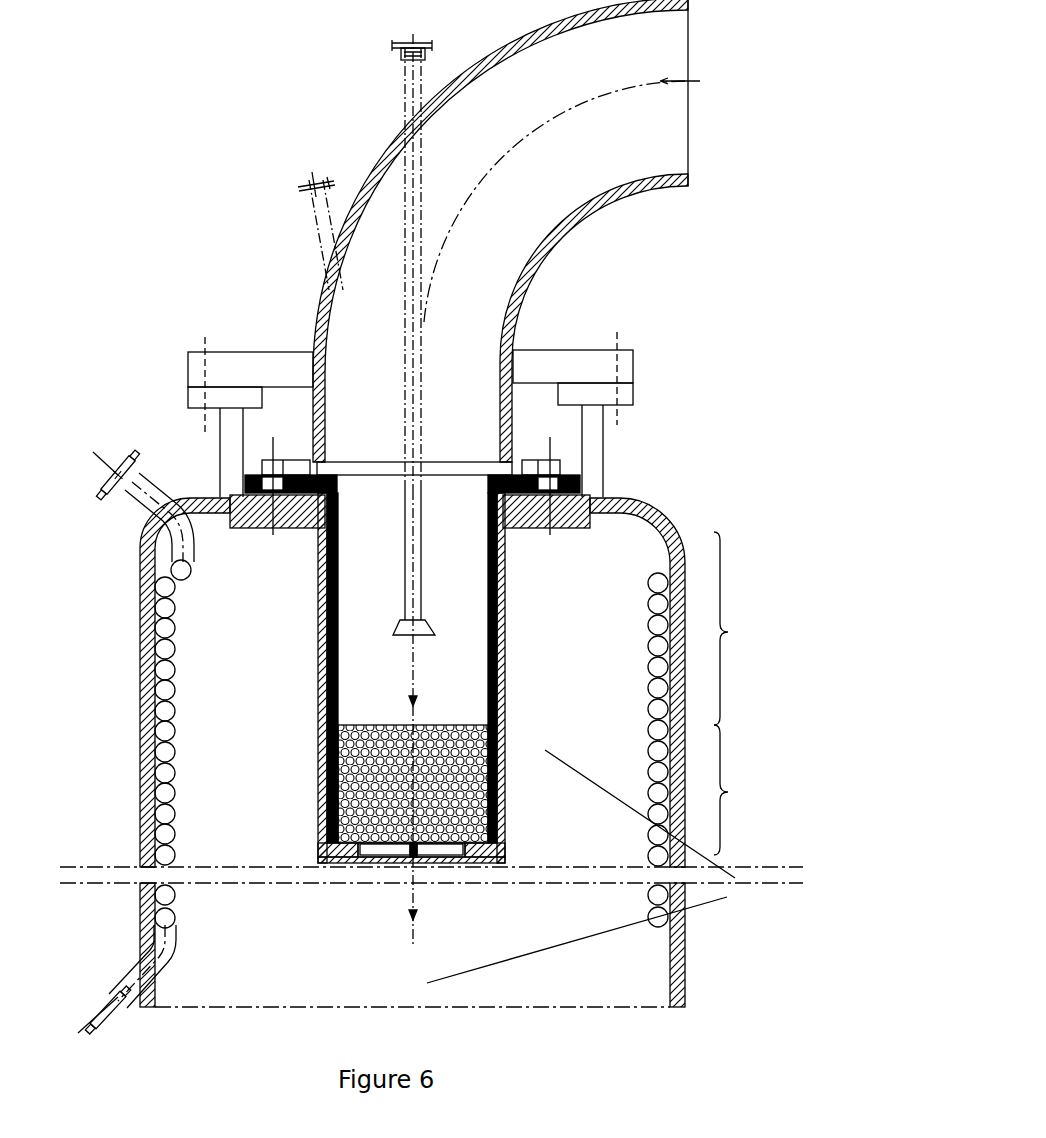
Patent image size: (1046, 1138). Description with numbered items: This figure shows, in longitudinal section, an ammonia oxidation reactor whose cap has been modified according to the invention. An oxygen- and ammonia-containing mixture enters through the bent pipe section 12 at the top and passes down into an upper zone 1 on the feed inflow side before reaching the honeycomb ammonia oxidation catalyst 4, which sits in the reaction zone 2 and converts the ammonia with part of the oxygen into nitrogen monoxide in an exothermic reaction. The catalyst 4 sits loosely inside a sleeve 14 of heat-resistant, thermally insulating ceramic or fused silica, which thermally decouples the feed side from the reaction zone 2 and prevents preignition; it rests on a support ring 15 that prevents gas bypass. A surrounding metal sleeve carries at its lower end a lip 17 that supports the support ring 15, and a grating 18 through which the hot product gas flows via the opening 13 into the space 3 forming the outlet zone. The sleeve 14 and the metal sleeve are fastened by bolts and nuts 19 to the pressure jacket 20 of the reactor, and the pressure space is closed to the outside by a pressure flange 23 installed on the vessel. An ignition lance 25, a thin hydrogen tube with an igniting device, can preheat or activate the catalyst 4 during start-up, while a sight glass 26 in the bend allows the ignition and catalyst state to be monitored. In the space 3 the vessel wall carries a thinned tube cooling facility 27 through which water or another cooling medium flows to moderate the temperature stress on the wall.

The upper zone 1 is at (737, 628).
The reaction zone 2 is at (737, 790).
The space 3 is at (595, 866).
The ammonia oxidation catalyst 4 is at (420, 828).
The pipe section 12 is at (630, 180).
The opening 13 is at (392, 852).
The sleeve 14 is at (338, 633).
The support ring 15 is at (328, 850).
The lip 17 is at (497, 858).
The grating 18 is at (405, 858).
The bolts and nuts 19 is at (275, 442).
The pressure jacket 20 is at (633, 508).
The pressure flange 23 is at (625, 362).
The ignition lance 25 is at (415, 572).
The sight glass 26 is at (318, 222).
The thinned tube cooling facility 27 is at (165, 625).